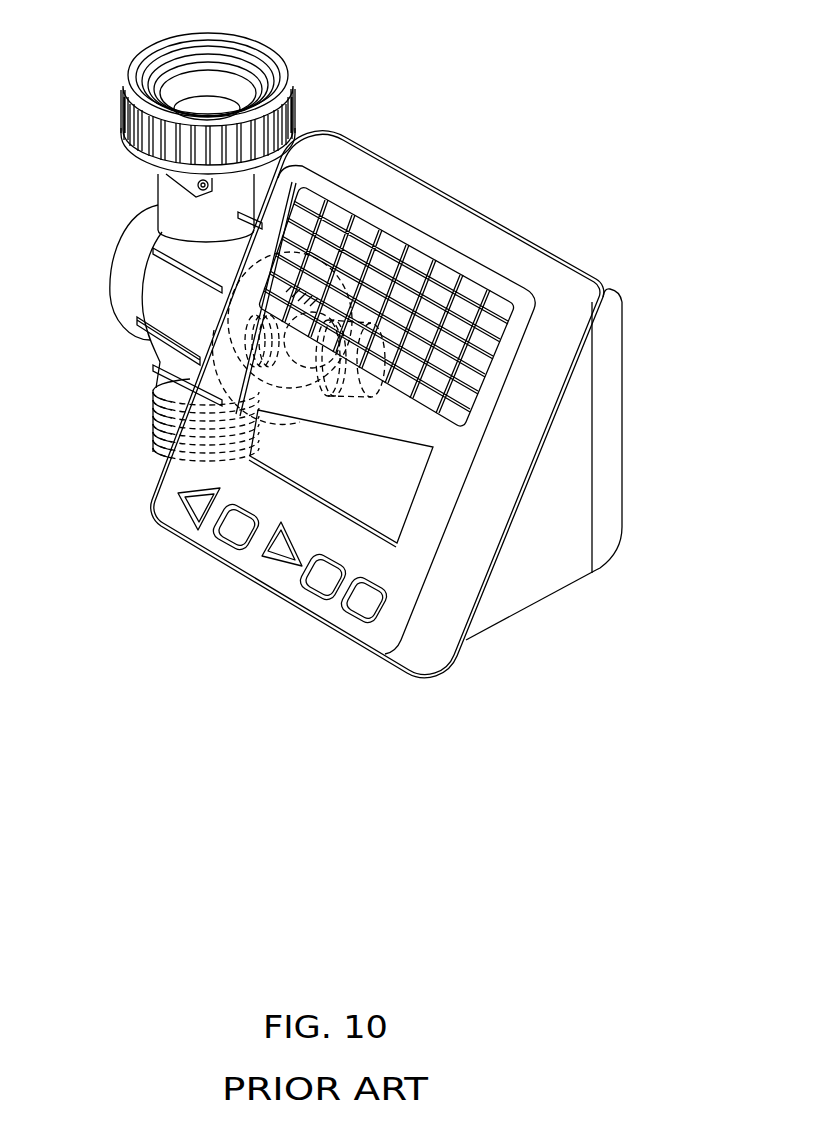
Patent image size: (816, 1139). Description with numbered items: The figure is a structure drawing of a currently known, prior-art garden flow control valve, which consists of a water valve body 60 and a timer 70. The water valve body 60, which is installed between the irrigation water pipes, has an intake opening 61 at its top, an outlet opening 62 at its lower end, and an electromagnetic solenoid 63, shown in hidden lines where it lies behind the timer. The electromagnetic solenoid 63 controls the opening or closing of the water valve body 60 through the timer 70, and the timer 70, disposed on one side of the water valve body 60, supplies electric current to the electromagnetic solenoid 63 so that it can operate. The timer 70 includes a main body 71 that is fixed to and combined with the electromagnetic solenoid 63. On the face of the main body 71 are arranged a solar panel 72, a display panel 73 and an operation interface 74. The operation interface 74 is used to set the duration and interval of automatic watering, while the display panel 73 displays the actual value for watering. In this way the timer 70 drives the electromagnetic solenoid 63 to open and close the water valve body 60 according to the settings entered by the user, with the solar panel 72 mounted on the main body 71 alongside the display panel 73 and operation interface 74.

The water valve body 60 is at (118, 221).
The intake opening 61 is at (210, 107).
The outlet opening 62 is at (192, 470).
The electromagnetic solenoid 63 is at (350, 395).
The timer 70 is at (560, 614).
The main body 71 is at (583, 457).
The solar panel 72 is at (367, 230).
The display panel 73 is at (383, 508).
The operation interface 74 is at (275, 560).